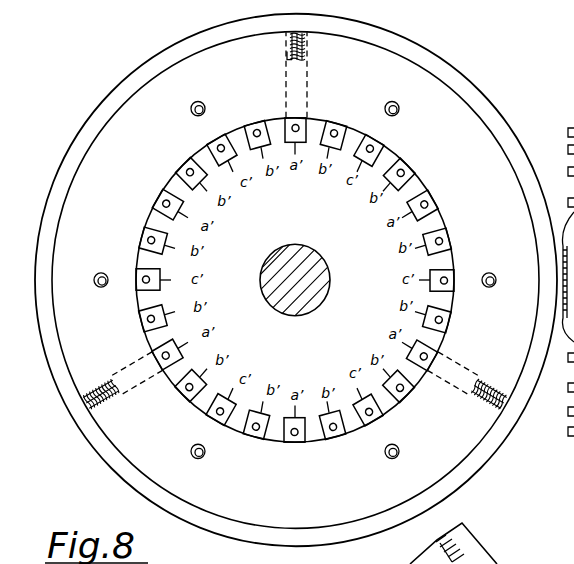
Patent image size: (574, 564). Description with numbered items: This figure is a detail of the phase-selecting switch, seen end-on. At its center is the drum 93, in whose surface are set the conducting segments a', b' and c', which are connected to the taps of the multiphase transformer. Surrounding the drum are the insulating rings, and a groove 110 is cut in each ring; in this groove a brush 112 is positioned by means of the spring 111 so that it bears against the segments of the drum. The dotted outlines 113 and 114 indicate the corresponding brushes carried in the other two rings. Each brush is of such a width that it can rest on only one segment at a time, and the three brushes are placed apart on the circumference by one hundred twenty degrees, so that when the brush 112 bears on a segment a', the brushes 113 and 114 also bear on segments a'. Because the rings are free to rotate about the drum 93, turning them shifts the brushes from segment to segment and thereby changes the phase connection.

The drum 93 is at (278, 249).
The groove 110 is at (287, 61).
The spring 111 is at (290, 46).
The brush 112 is at (303, 88).
The brush 113 is at (466, 392).
The brush 114 is at (113, 371).